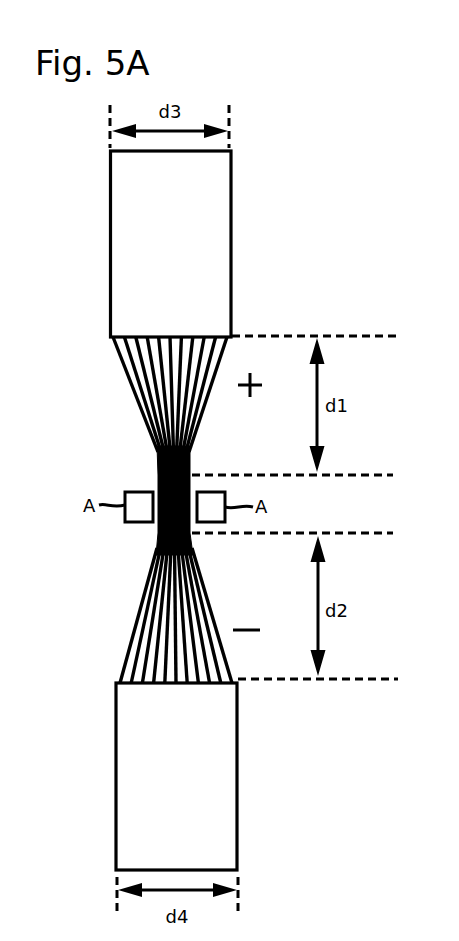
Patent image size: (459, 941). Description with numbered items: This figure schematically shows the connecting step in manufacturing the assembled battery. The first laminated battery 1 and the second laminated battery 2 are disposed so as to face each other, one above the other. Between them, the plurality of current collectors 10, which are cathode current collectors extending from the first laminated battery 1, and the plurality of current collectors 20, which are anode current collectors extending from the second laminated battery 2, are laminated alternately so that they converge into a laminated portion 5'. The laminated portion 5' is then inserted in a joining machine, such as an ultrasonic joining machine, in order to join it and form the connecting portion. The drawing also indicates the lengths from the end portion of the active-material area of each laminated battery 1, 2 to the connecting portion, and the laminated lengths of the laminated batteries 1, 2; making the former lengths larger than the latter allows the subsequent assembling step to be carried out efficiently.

The first laminated battery 1 is at (232, 168).
The second laminated battery 2 is at (238, 858).
The current collectors 10 is at (135, 402).
The current collectors 20 is at (137, 598).
The laminated portion 5' is at (152, 500).